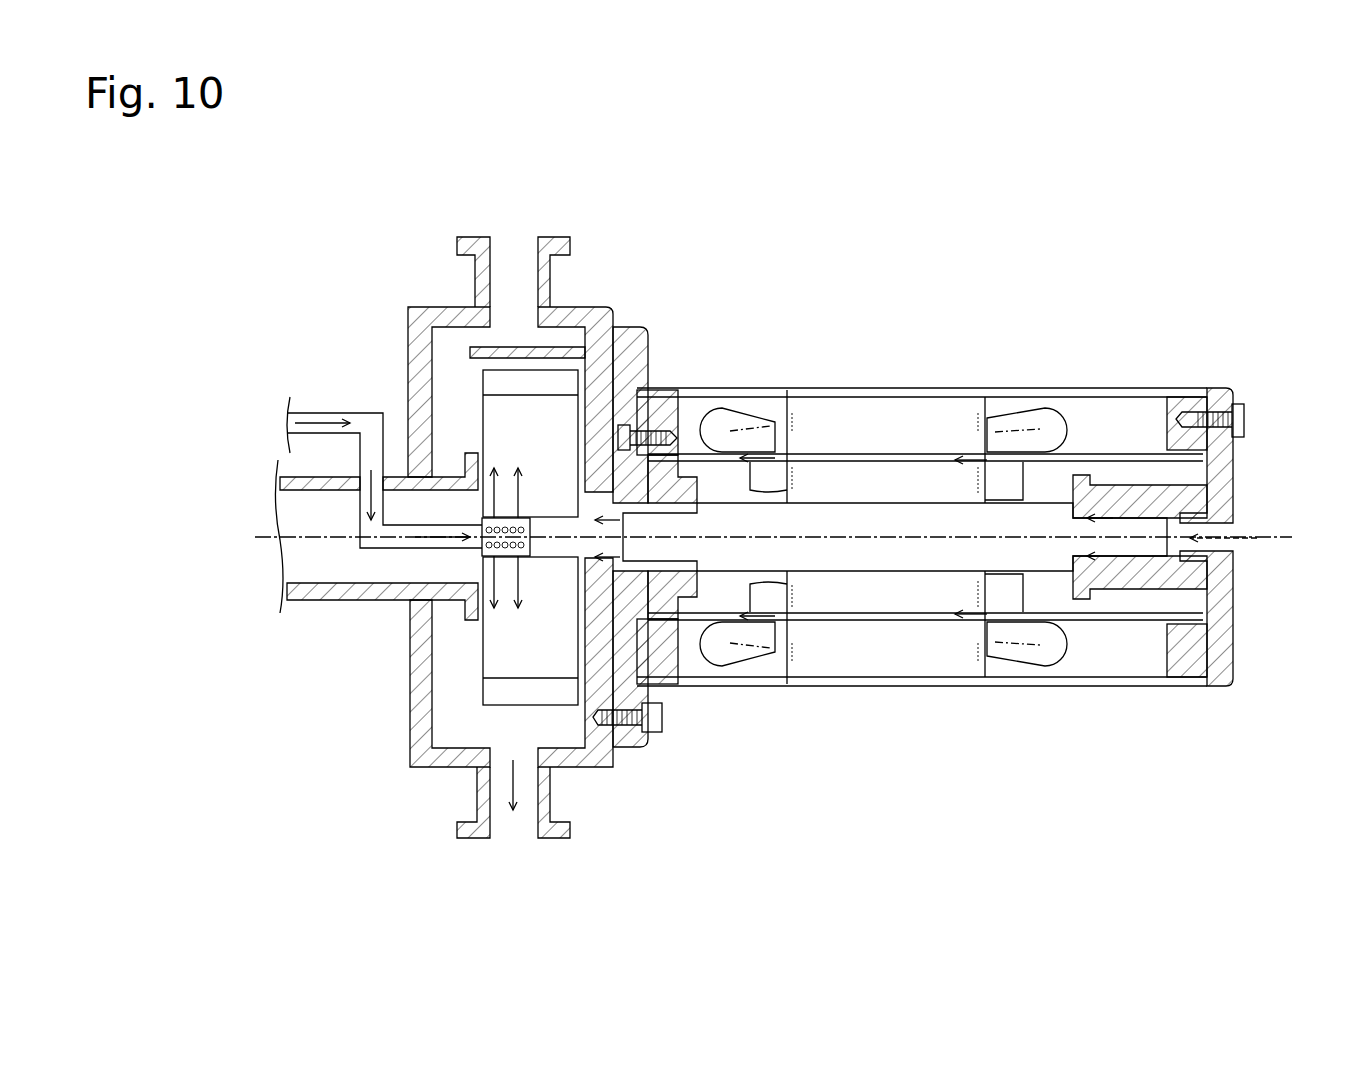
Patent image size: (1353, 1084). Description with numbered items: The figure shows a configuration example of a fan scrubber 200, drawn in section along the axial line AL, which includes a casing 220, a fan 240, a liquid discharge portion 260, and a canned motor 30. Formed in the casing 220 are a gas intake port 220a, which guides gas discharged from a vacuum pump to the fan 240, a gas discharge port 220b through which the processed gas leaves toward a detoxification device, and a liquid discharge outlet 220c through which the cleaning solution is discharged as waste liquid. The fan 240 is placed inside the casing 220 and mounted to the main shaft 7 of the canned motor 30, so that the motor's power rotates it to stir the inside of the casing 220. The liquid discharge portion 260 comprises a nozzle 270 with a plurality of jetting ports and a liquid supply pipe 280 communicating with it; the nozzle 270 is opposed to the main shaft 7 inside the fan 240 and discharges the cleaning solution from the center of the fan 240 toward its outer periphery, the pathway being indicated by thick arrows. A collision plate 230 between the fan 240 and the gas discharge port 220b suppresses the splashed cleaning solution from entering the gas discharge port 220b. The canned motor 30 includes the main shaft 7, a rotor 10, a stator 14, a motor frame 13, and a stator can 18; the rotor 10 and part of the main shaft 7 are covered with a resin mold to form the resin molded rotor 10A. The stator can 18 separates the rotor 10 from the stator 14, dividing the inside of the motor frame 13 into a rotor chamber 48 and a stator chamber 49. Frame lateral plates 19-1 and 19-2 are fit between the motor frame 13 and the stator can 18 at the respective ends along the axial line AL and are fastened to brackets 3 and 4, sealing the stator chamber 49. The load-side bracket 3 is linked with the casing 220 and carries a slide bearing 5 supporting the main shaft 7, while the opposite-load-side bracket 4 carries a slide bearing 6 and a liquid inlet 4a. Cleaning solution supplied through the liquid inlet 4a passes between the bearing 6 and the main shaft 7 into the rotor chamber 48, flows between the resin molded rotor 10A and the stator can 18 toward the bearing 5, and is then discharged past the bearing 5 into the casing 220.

The fan scrubber 200 is at (333, 251).
The casing 220 is at (591, 327).
The gas intake port 220a is at (318, 563).
The gas discharge port 220b is at (520, 252).
The liquid discharge outlet 220c is at (518, 834).
The collision plate 230 is at (546, 402).
The fan 240 is at (640, 355).
The liquid discharge portion 260 is at (305, 385).
The nozzle 270 is at (483, 522).
The liquid supply pipe 280 is at (364, 413).
The axial line AL is at (318, 537).
The bracket 3 is at (652, 344).
The bracket 4 is at (1217, 388).
The liquid inlet 4a is at (1240, 525).
The bearing 5 is at (688, 477).
The bearing 6 is at (1078, 480).
The main shaft 7 is at (837, 523).
The rotor 10 is at (873, 480).
The resin molded rotor 10A is at (897, 290).
The motor frame 13 is at (1125, 390).
The stator 14 is at (925, 425).
The stator can 18 is at (930, 622).
The frame lateral plate 19-1 is at (667, 402).
The frame lateral plate 19-2 is at (1177, 407).
The canned motor 30 is at (1073, 277).
The rotor chamber 48 is at (1042, 597).
The stator chamber 49 is at (1090, 657).